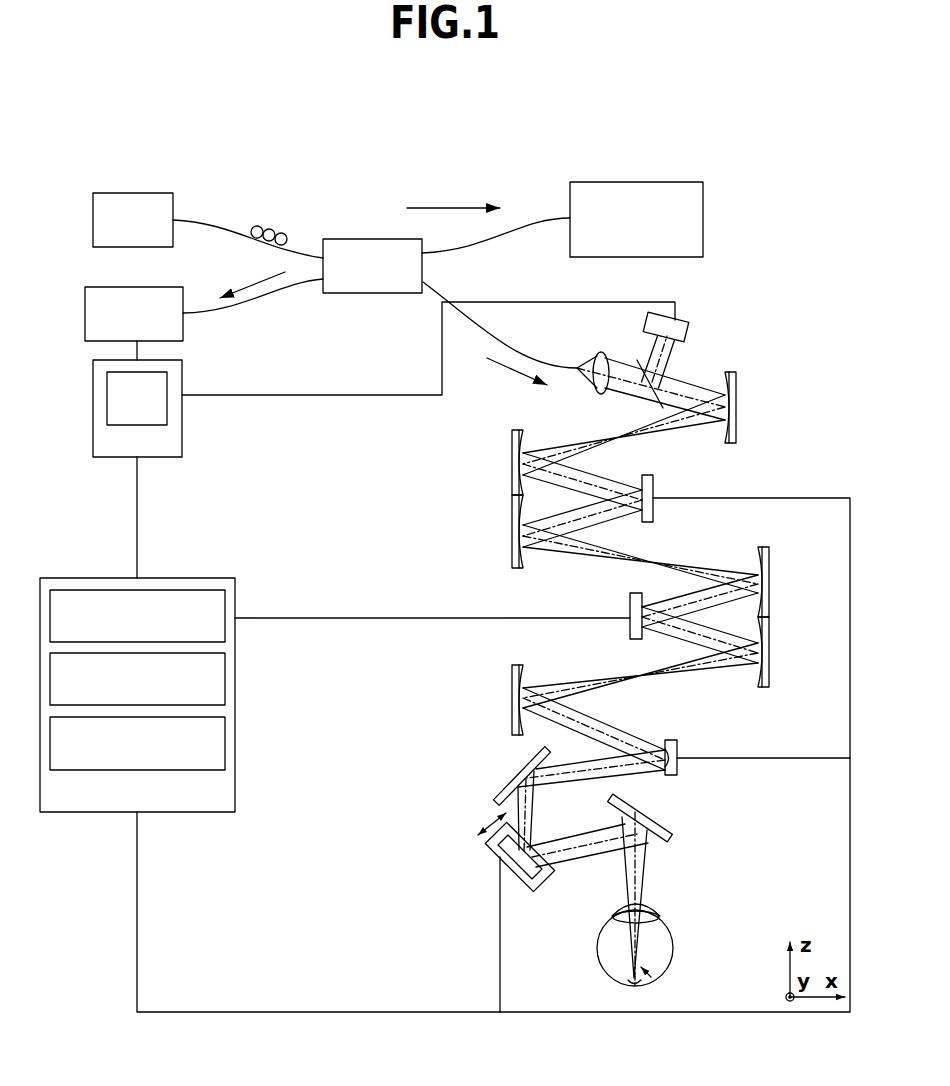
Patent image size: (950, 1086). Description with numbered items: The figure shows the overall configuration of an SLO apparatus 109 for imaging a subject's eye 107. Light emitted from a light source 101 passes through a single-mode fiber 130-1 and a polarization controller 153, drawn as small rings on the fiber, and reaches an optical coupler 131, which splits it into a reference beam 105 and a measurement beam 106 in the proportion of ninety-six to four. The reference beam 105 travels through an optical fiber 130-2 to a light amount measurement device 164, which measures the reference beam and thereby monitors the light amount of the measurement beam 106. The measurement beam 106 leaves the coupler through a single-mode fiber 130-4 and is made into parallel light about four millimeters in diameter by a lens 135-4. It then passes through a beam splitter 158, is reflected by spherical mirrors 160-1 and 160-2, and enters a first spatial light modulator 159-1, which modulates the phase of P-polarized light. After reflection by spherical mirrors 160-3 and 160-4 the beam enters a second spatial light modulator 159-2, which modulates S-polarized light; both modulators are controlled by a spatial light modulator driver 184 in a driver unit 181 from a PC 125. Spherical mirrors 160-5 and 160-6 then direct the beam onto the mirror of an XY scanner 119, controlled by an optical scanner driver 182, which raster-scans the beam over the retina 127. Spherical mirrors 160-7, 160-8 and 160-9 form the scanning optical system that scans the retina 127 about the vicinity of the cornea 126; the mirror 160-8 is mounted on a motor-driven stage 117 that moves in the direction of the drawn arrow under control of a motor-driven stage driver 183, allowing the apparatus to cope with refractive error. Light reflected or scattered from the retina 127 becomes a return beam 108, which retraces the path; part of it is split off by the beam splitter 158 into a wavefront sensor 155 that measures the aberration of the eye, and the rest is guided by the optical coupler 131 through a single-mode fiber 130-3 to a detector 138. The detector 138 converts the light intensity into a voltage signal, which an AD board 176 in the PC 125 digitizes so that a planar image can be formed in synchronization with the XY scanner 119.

The SLO apparatus 109 is at (213, 107).
The light source 101 is at (133, 193).
The single-mode fiber 130-1 is at (218, 220).
The polarization controller 153 is at (273, 222).
The optical coupler 131 is at (372, 238).
The reference beam 105 is at (453, 196).
The light amount measurement device 164 is at (637, 182).
The optical fiber 130-2 is at (508, 240).
The detector 138 is at (105, 287).
The return beam 108 is at (700, 960).
The single-mode fiber 130-3 is at (245, 310).
The single-mode fiber 130-4 is at (437, 289).
The AD board 176 is at (167, 377).
The PC 125 is at (182, 445).
The driver unit 181 is at (235, 790).
The optical scanner driver 182 is at (225, 600).
The motor-driven stage driver 183 is at (225, 675).
The spatial light modulator driver 184 is at (225, 740).
The measurement beam 106 is at (503, 373).
The lens 135-4 is at (595, 388).
The beam splitter 158 is at (661, 406).
The wavefront sensor 155 is at (648, 324).
The spherical mirror 160-1 is at (766, 407).
The spherical mirror 160-2 is at (481, 462).
The spherical mirror 160-3 is at (481, 531).
The first spatial light modulator 159-1 is at (683, 498).
The spherical mirror 160-4 is at (799, 582).
The spherical mirror 160-5 is at (799, 652).
The second spatial light modulator 159-2 is at (600, 615).
The spherical mirror 160-6 is at (481, 700).
The XY scanner 119 is at (677, 745).
The spherical mirror 160-7 is at (500, 775).
The motor-driven stage 117 is at (488, 846).
The spherical mirror 160-8 is at (566, 892).
The spherical mirror 160-9 is at (657, 817).
The cornea 126 is at (660, 913).
The subject's eye 107 is at (673, 944).
The retina 127 is at (642, 985).